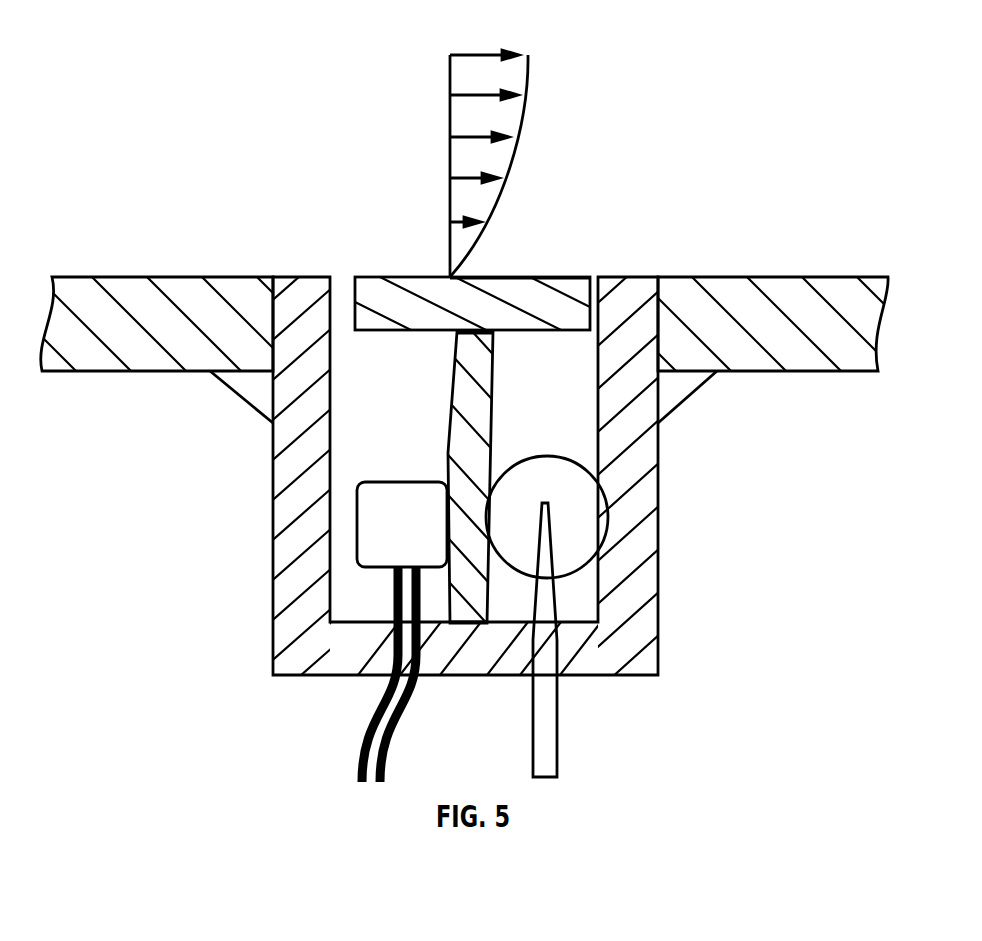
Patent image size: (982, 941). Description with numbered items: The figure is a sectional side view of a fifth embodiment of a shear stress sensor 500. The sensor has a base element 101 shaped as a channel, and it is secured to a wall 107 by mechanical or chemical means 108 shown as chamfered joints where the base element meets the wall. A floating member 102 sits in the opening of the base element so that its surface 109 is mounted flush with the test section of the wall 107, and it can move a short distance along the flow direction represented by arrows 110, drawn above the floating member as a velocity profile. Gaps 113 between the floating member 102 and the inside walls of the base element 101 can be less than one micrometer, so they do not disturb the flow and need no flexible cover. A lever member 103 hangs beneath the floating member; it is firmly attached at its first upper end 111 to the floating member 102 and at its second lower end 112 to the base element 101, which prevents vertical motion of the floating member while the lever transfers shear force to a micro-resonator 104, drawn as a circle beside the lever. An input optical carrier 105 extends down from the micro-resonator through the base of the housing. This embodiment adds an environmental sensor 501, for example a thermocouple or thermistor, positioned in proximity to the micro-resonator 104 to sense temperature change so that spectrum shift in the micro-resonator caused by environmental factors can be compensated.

The sensor assembly 500 is at (491, 395).
The base element 101 is at (280, 677).
The floating member 102 is at (430, 288).
The lever member 103 is at (472, 410).
The micro-resonator 104 is at (570, 427).
The input optical carrier 105 is at (557, 743).
The wall 107 is at (127, 277).
The mechanical or chemical means 108 is at (240, 403).
The surface 109 is at (502, 277).
The arrows 110 is at (489, 143).
The first upper end 111 is at (457, 332).
The second lower end 112 is at (477, 618).
The gaps 113 is at (343, 277).
The environmental sensor 501 is at (405, 490).